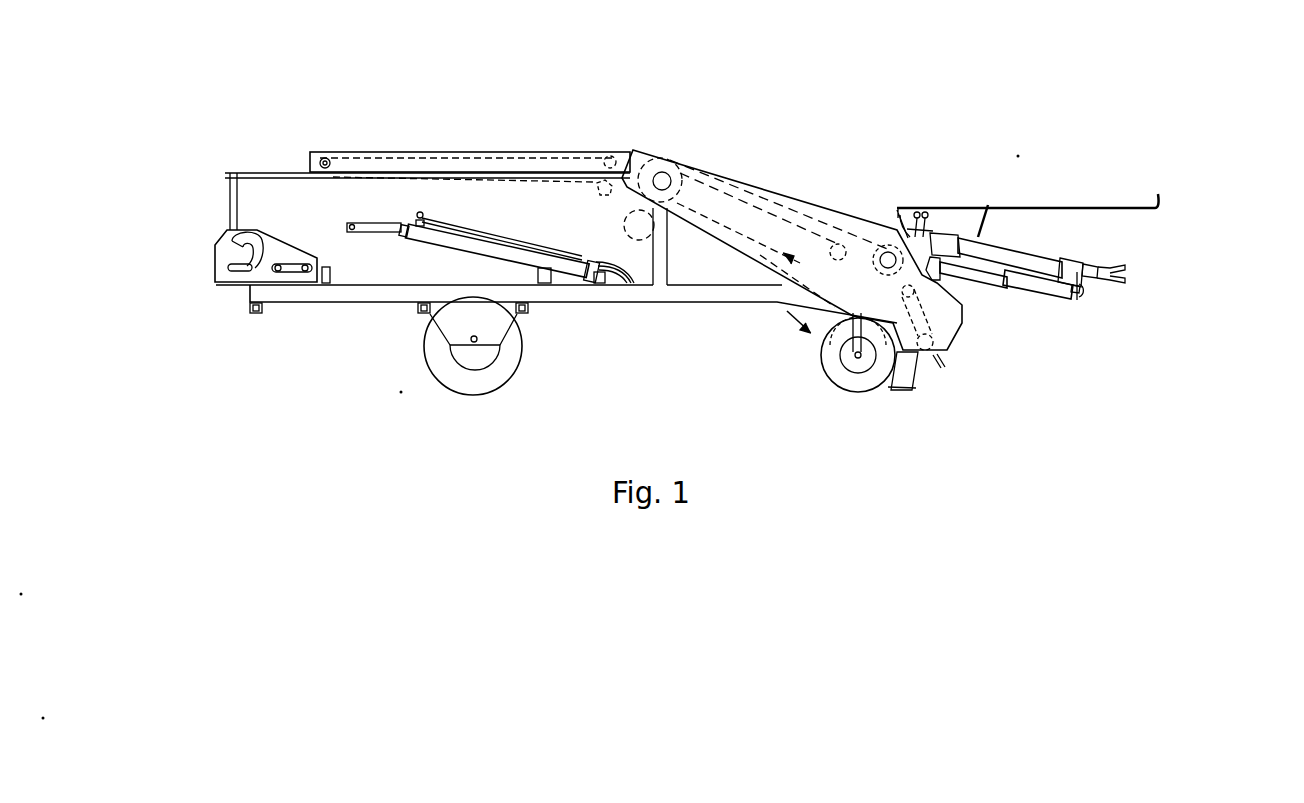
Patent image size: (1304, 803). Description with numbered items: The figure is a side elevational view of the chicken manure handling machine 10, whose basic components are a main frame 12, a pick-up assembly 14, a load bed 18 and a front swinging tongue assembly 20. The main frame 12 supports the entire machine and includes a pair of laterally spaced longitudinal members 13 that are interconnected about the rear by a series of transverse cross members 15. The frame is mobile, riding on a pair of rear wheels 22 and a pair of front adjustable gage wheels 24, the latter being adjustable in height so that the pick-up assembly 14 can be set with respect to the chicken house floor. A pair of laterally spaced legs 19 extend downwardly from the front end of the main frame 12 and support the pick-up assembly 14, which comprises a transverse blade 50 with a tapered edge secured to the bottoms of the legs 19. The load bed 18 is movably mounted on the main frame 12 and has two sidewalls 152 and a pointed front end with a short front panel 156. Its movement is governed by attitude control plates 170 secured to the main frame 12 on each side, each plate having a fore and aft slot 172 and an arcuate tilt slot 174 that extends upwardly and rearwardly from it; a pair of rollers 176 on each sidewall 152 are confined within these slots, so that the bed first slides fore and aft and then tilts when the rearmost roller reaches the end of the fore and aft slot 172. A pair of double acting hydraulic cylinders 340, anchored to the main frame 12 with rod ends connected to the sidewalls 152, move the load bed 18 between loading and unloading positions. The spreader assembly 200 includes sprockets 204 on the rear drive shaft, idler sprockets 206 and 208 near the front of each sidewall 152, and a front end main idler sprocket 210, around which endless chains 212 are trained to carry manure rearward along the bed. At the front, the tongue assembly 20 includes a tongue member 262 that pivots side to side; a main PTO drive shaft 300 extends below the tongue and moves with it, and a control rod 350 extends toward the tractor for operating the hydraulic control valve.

The chicken manure handling machine 10 is at (542, 116).
The main frame 12 is at (333, 318).
The longitudinal members 13 is at (385, 293).
The pick-up assembly 14 is at (976, 352).
The transverse cross members 15 is at (254, 314).
The load bed 18 is at (209, 201).
The legs 19 is at (905, 375).
The front swinging tongue assembly 20 is at (1130, 297).
The rear wheels 22 is at (490, 376).
The front adjustable gage wheels 24 is at (840, 376).
The transverse blade 50 is at (913, 388).
The sidewalls 152 is at (499, 229).
The short front panel 156 is at (668, 233).
The attitude control plates 170 is at (230, 257).
The fore and aft slot 172 is at (250, 270).
The tilt slot 174 is at (240, 232).
The rollers 176 is at (278, 272).
The spreader assembly 200 is at (485, 136).
The sprockets 204 is at (330, 160).
The idler sprocket 206 is at (615, 152).
The idler sprocket 208 is at (582, 153).
The front end main idler sprocket 210 is at (654, 232).
The endless chains 212 is at (420, 160).
The tongue member 262 is at (1037, 262).
The main PTO drive shaft 300 is at (1040, 285).
The double acting hydraulic cylinders 340 is at (563, 270).
The control rod 350 is at (1032, 208).